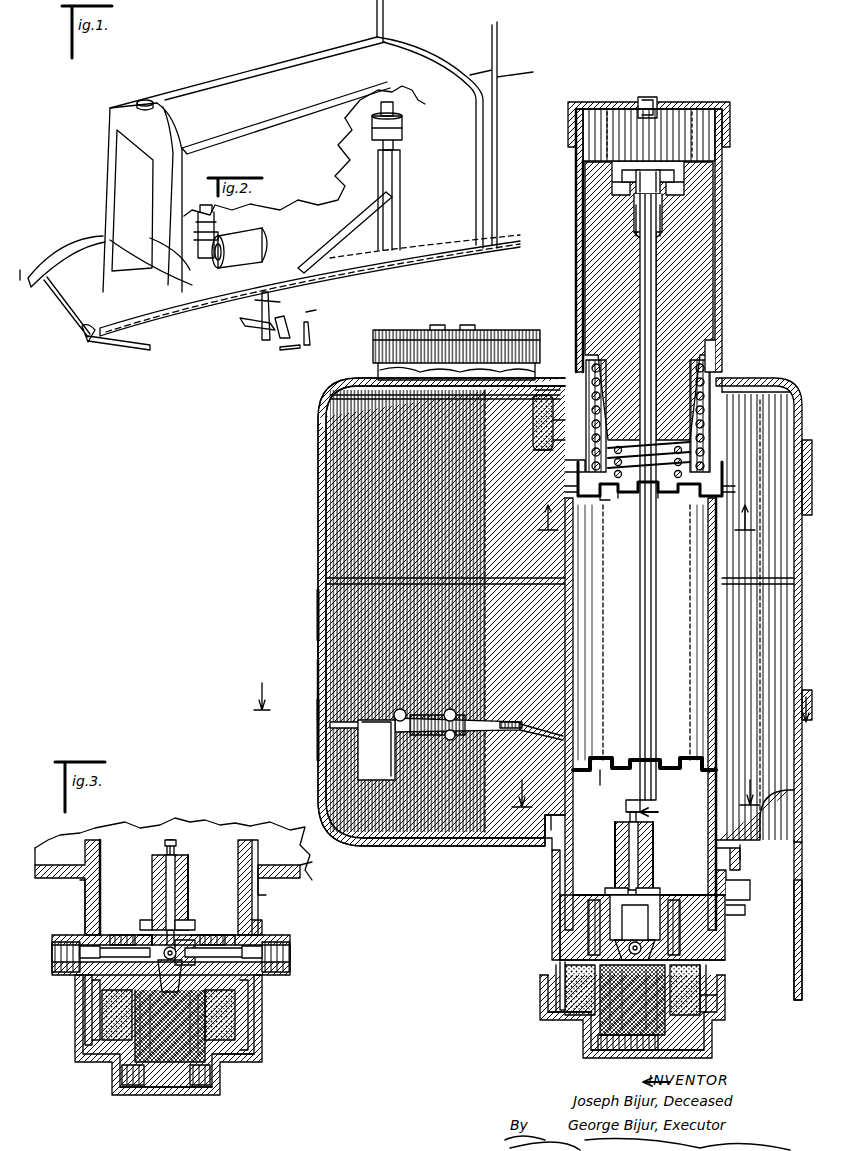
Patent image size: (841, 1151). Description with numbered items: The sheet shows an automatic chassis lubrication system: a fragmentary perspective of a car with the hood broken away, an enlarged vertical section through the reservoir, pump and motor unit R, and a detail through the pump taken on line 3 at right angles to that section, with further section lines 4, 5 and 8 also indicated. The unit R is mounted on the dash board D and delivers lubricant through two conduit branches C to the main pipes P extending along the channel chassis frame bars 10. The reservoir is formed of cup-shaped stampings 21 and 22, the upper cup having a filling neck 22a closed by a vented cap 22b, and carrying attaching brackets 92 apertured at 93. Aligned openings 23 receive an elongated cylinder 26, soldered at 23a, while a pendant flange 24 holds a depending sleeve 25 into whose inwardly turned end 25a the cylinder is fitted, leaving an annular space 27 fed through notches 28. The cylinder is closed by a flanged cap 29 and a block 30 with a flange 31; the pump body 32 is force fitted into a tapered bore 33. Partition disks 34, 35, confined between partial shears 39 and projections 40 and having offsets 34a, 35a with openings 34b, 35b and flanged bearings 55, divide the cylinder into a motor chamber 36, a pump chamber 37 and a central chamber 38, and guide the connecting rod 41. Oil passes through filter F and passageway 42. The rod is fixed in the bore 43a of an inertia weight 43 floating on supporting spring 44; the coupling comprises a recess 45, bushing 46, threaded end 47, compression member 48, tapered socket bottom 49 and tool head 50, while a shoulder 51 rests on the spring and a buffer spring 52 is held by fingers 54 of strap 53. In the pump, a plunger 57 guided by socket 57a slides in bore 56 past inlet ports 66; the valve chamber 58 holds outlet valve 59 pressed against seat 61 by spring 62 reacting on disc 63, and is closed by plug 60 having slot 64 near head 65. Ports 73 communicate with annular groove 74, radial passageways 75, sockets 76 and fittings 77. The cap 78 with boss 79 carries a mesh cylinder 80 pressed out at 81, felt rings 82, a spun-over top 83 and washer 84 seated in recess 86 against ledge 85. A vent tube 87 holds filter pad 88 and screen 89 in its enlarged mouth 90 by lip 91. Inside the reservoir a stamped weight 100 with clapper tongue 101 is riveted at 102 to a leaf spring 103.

In FIG. 1, the channel chassis frame bars 10 is at (433, 268).
In FIG. 1, the reservoir pump and motor unit R is at (405, 130).
In FIG. 2, the reservoir pump and motor unit R is at (306, 660).
In FIG. 1, the dash board D is at (400, 172).
In FIG. 1, the conduit branches C is at (405, 198).
In FIG. 1, the main pipes P is at (420, 262).
In FIG. 2, the lower cup-shaped stamping 21 is at (318, 692).
In FIG. 3, the lower cup-shaped stamping 21 is at (300, 878).
In FIG. 2, the upper inverted cup 22 is at (320, 460).
In FIG. 2, the filling neck 22a is at (456, 384).
In FIG. 2, the vented cap 22b is at (500, 350).
In FIG. 2, the aligned openings 23 is at (735, 840).
In FIG. 2, the solder joint 23a is at (735, 376).
In FIG. 2, the pendant flange 24 is at (730, 862).
In FIG. 3, the pendant flange 24 is at (262, 890).
In FIG. 2, the depending sleeve member 25 is at (728, 898).
In FIG. 3, the depending sleeve member 25 is at (255, 911).
In FIG. 2, the inwardly turned upper end 25a is at (735, 840).
In FIG. 3, the inwardly turned upper end 25a is at (258, 840).
In FIG. 2, the cylinder 26 is at (716, 656).
In FIG. 3, the cylinder 26 is at (108, 838).
In FIG. 2, the annular space 27 is at (560, 900).
In FIG. 3, the annular space 27 is at (255, 931).
In FIG. 2, the notches 28 is at (548, 808).
In FIG. 2, the flanged cap 29 is at (683, 102).
In FIG. 2, the block 30 is at (716, 921).
In FIG. 3, the block 30 is at (145, 938).
In FIG. 2, the flange 31 is at (726, 955).
In FIG. 3, the flange 31 is at (250, 1002).
In FIG. 2, the pump body 32 is at (655, 897).
In FIG. 3, the pump body 32 is at (180, 890).
In FIG. 2, the tapered receiving bore 33 is at (605, 898).
In FIG. 2, the upper partition disk 34 is at (690, 500).
In FIG. 2, the upstruck offset 34a is at (600, 500).
In FIG. 2, the opening 34b is at (618, 498).
In FIG. 2, the lower partition disk 35 is at (668, 762).
In FIG. 2, the upstruck offset 35a is at (608, 790).
In FIG. 2, the opening 35b is at (614, 756).
In FIG. 2, the uppermost chamber 36 is at (722, 156).
In FIG. 2, the lowermost chamber 37 is at (598, 762).
In FIG. 2, the central chamber 38 is at (718, 628).
In FIG. 2, the partial shears 39 is at (716, 500).
In FIG. 2, the inwardly struck projections 40 is at (710, 492).
In FIG. 2, the reciprocatory connecting rod 41 is at (650, 572).
In FIG. 2, the passageway 42 is at (654, 870).
In FIG. 2, the inertia weight 43 is at (722, 228).
In FIG. 2, the bore 43a is at (658, 282).
In FIG. 2, the coiled supporting spring 44 is at (706, 421).
In FIG. 2, the recess 45 is at (668, 172).
In FIG. 2, the bushing 46 is at (660, 190).
In FIG. 2, the threaded upper end 47 is at (640, 203).
In FIG. 2, the compression coupling member 48 is at (636, 230).
In FIG. 2, the tapered socket bottom 49 is at (640, 205).
In FIG. 2, the tool receiving head 50 is at (632, 172).
In FIG. 2, the shoulder 51 is at (718, 346).
In FIG. 2, the buffer spring 52 is at (700, 445).
In FIG. 2, the disk or strap 53 is at (582, 468).
In FIG. 2, the outstruck fingers 54 is at (700, 462).
In FIG. 2, the flanged apertures 55 is at (660, 498).
In FIG. 2, the longitudinal bore 56 is at (652, 846).
In FIG. 3, the longitudinal bore 56 is at (190, 872).
In FIG. 2, the plunger 57 is at (630, 836).
In FIG. 3, the plunger 57 is at (175, 840).
In FIG. 2, the guiding socket 57a is at (632, 818).
In FIG. 3, the guiding socket 57a is at (178, 850).
In FIG. 2, the valve chamber 58 is at (730, 893).
In FIG. 3, the valve chamber 58 is at (100, 1030).
In FIG. 2, the outlet valve 59 is at (612, 888).
In FIG. 3, the outlet valve 59 is at (148, 930).
In FIG. 2, the sealing plug 60 is at (630, 962).
In FIG. 3, the sealing plug 60 is at (178, 995).
In FIG. 2, the seat 61 is at (645, 888).
In FIG. 2, the coiled expansion spring 62 is at (610, 930).
In FIG. 2, the disc 63 is at (600, 958).
In FIG. 2, the screw driver slot 64 is at (650, 970).
In FIG. 3, the screw driver slot 64 is at (168, 1000).
In FIG. 2, the head 65 is at (632, 1000).
In FIG. 3, the head 65 is at (142, 1000).
In FIG. 2, the inlet ports 66 is at (615, 866).
In FIG. 3, the inlet ports 66 is at (182, 912).
In FIG. 2, the ports 73 is at (615, 915).
In FIG. 3, the ports 73 is at (190, 945).
In FIG. 2, the annular groove 74 is at (735, 912).
In FIG. 3, the annular groove 74 is at (196, 955).
In FIG. 3, the radial passageways 75 is at (140, 940).
In FIG. 3, the sockets 76 is at (88, 916).
In FIG. 3, the fittings 77 is at (55, 975).
In FIG. 2, the detachable flanged cap 78 is at (565, 1030).
In FIG. 3, the detachable flanged cap 78 is at (255, 1060).
In FIG. 2, the tool receiving boss 79 is at (590, 1055).
In FIG. 3, the tool receiving boss 79 is at (192, 1090).
In FIG. 2, the wire mesh cylinder 80 is at (664, 1038).
In FIG. 3, the wire mesh cylinder 80 is at (122, 1066).
In FIG. 3, the pressed out lower end 81 is at (215, 1068).
In FIG. 2, the felt filter rings 82 is at (706, 990).
In FIG. 3, the felt filter rings 82 is at (248, 1040).
In FIG. 2, the spun over top 83 is at (690, 936).
In FIG. 3, the spun over top 83 is at (258, 988).
In FIG. 2, the washer 84 is at (700, 970).
In FIG. 3, the washer 84 is at (232, 1025).
In FIG. 2, the ledge 85 is at (565, 975).
In FIG. 3, the ledge 85 is at (90, 990).
In FIG. 2, the recess 86 is at (548, 992).
In FIG. 3, the recess 86 is at (90, 1012).
In FIG. 2, the vent tube 87 is at (563, 378).
In FIG. 2, the air pervious filter pad 88 is at (533, 426).
In FIG. 2, the screen 89 is at (530, 448).
In FIG. 2, the enlarged mouth 90 is at (530, 398).
In FIG. 2, the retaining lip 91 is at (535, 455).
In FIG. 2, the attaching brackets 92 is at (800, 846).
In FIG. 2, the apertures 93 is at (794, 898).
In FIG. 2, the stamped metal weight 100 is at (504, 728).
In FIG. 2, the clapper tongue 101 is at (376, 750).
In FIG. 2, the rivet 102 is at (452, 720).
In FIG. 2, the flexible leaf spring 103 is at (536, 726).
In FIG. 2, the filter F is at (718, 1009).
In FIG. 2, the section line 3— 3 is at (651, 949).
In FIG. 2, the section line 4 is at (646, 517).
In FIG. 2, the section line 5 is at (638, 794).
In FIG. 2, the section line 8 is at (526, 699).